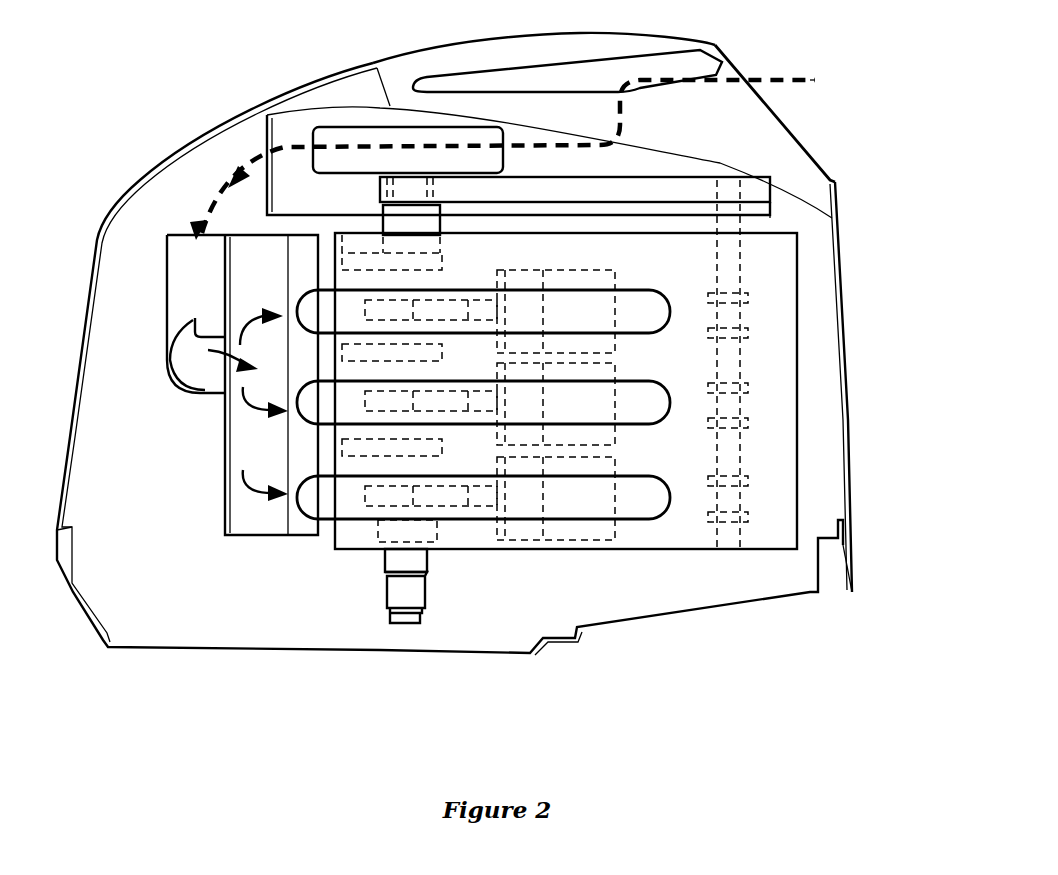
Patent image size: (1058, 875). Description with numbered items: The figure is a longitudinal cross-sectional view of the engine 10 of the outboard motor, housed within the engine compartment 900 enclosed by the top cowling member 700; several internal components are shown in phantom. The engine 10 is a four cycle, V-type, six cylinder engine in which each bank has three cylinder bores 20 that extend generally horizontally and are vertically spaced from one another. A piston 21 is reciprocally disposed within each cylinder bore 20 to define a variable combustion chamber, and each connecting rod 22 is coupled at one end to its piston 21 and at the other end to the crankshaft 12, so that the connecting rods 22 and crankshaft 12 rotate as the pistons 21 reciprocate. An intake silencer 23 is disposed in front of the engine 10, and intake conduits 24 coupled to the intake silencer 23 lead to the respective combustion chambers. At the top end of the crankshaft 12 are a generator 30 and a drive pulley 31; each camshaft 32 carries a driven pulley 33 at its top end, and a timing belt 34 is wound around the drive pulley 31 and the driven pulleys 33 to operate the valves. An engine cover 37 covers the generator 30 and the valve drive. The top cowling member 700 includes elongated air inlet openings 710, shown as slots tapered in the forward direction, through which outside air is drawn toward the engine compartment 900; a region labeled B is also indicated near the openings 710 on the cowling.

The engine 10 is at (320, 570).
The crankshaft 12 is at (395, 583).
The cylinder bore 20 is at (607, 282).
The piston 21 is at (525, 283).
The connecting rod 22 is at (447, 298).
The intake silencer 23 is at (243, 420).
The intake conduit 24 is at (317, 310).
The generator 30 is at (364, 137).
The drive pulley 31 is at (380, 190).
The camshaft 32 is at (733, 258).
The driven pulley 33 is at (767, 183).
The timing belt 34 is at (652, 190).
The engine cover 37 is at (302, 116).
The top cowling member 700 is at (848, 362).
The air inlet opening 710 is at (720, 68).
The engine compartment 900 is at (84, 482).
The air outlet region B is at (812, 85).